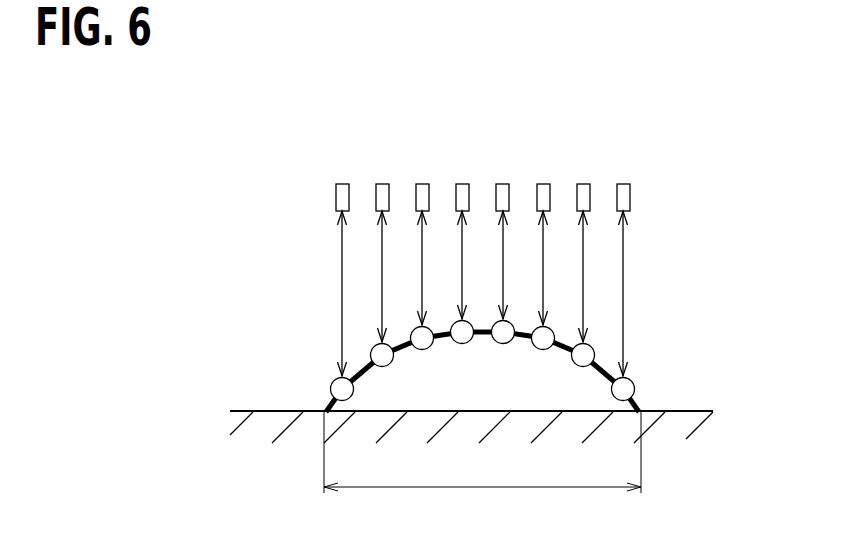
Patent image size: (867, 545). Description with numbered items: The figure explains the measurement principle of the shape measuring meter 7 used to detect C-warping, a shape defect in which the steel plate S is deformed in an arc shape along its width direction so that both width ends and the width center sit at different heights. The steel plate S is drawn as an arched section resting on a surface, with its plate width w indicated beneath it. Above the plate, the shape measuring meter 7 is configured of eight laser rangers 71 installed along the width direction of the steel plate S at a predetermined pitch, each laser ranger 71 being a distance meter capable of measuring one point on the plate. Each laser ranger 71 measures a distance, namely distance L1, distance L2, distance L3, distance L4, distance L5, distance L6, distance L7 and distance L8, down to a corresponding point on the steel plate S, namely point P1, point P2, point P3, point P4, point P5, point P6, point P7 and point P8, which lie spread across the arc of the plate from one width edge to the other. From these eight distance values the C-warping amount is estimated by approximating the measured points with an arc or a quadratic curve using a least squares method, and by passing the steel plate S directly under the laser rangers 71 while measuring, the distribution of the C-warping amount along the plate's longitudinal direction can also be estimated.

The shape measuring meter 7 is at (482, 140).
The laser ranger 71 is at (603, 167).
The steel plate S is at (479, 328).
The width W is at (482, 464).
The distance L1 is at (634, 293).
The distance L2 is at (594, 276).
The distance L3 is at (554, 268).
The distance L4 is at (514, 265).
The distance L5 is at (473, 265).
The distance L6 is at (433, 268).
The distance L7 is at (393, 276).
The distance L8 is at (353, 293).
The point P1 is at (631, 379).
The point P2 is at (592, 346).
The point P3 is at (552, 328).
The point P4 is at (512, 322).
The point P5 is at (456, 321).
The point P6 is at (415, 329).
The point P7 is at (374, 346).
The point P8 is at (334, 379).